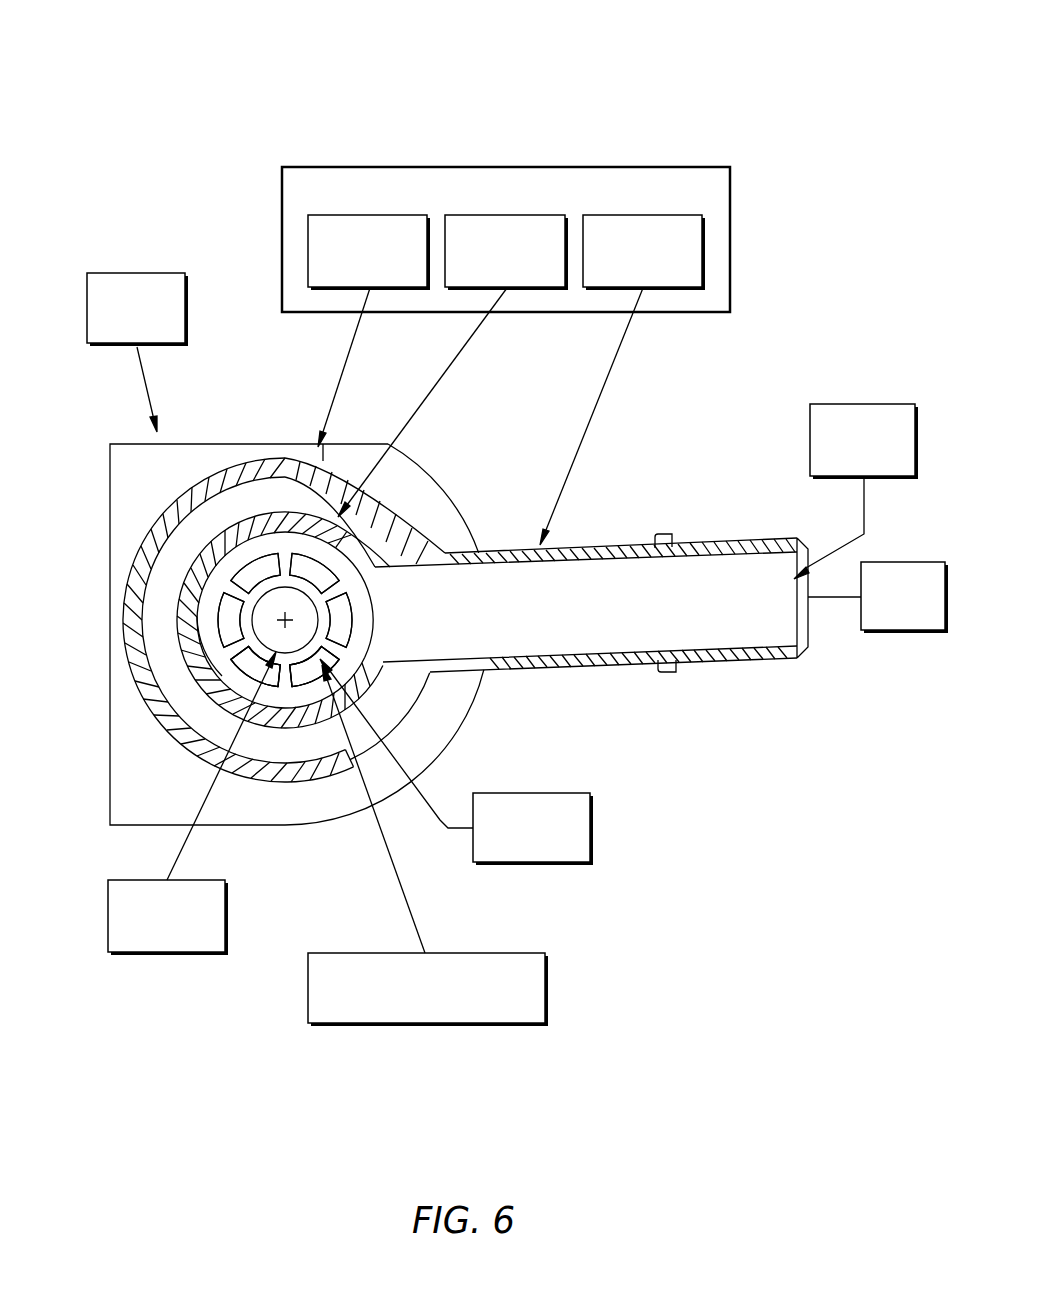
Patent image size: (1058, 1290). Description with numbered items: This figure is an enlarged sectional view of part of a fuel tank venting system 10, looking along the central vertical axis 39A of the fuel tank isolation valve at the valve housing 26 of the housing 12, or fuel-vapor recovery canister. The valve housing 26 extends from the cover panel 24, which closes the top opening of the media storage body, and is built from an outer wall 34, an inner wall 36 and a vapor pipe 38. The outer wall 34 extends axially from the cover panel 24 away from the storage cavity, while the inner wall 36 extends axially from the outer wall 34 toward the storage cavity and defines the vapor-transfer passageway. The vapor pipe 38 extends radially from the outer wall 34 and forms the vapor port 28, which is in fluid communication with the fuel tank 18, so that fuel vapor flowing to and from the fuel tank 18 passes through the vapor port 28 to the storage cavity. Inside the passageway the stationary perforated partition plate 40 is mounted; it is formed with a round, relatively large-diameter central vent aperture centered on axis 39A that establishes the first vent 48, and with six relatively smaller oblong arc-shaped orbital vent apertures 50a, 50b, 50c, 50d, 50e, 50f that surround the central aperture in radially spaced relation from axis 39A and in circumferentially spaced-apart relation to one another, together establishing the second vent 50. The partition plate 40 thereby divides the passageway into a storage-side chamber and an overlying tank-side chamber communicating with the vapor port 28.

The fuel tank venting system 10 is at (830, 128).
The housing 12 is at (195, 105).
The fuel tank 18 is at (903, 562).
The cover panel 24 is at (137, 273).
The valve housing 26 is at (468, 167).
The vapor port 28 is at (860, 275).
The outer wall 34 is at (368, 215).
The inner wall 36 is at (548, 290).
The vapor pipe 38 is at (643, 215).
The axis 39A is at (222, 676).
The perforated partition plate 40 is at (545, 992).
The first vent 48 is at (165, 953).
The second vent 50 is at (593, 828).
The orbital vent aperture 50a is at (355, 609).
The orbital vent aperture 50b is at (418, 700).
The orbital vent aperture 50c is at (273, 692).
The orbital vent aperture 50d is at (216, 616).
The orbital vent aperture 50e is at (238, 560).
The orbital vent aperture 50f is at (302, 555).